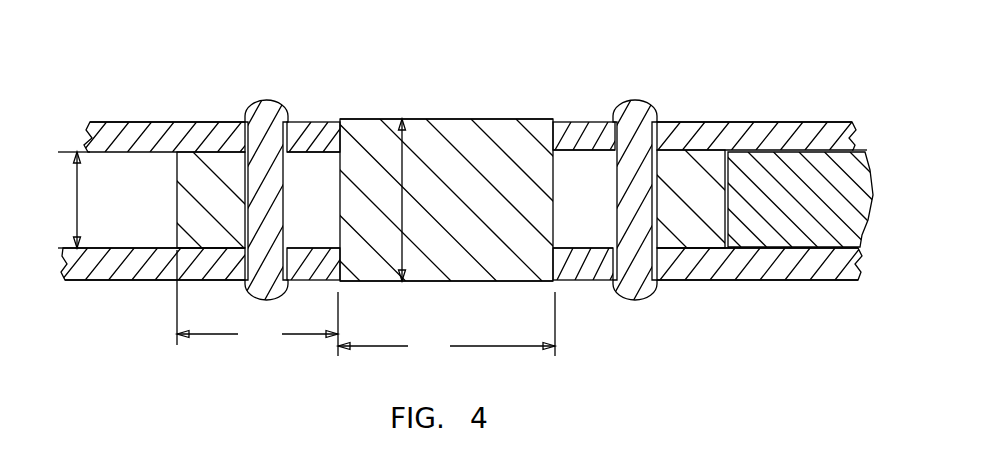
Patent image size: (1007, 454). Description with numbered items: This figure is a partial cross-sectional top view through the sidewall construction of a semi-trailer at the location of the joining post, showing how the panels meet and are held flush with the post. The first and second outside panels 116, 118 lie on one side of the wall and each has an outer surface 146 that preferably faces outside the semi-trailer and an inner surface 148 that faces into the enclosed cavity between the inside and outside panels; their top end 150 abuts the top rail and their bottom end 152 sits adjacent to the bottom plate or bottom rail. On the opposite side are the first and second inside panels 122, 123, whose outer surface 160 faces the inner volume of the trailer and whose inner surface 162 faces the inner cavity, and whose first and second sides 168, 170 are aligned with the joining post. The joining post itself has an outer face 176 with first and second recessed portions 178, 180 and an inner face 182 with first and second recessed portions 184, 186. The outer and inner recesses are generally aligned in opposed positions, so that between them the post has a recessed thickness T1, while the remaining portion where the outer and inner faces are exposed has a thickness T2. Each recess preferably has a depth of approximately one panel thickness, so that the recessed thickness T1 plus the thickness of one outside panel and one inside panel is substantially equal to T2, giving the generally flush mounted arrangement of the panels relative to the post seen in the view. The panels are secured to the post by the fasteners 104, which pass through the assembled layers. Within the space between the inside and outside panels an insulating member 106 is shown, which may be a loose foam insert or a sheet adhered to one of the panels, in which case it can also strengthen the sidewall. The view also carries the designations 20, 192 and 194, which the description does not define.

The fastener assembly 20 is at (489, 112).
The fasteners 104 is at (265, 108).
The insulating member 106 is at (757, 158).
The first outside panel 116 is at (178, 128).
The second outside panel 118 is at (833, 135).
The first inside panel 122 is at (147, 273).
The second inside panel 123 is at (733, 270).
The outer surface 146 is at (103, 280).
The inner surface 148 is at (78, 252).
The top end 150 is at (335, 124).
The bottom end 152 is at (560, 122).
The outer surface 160 is at (127, 123).
The inner surface 162 is at (105, 150).
The first side 168 is at (316, 281).
The second side 170 is at (580, 281).
The outer face 176 is at (487, 281).
The first recessed portion 178 is at (317, 153).
The second recessed portion 180 is at (580, 152).
The inner face 182 is at (427, 118).
The first recessed portion 184 is at (310, 247).
The second recessed portion 186 is at (570, 247).
The flange length 192 is at (257, 303).
The body length 194 is at (446, 324).
The recessed thickness T1 is at (71, 200).
The thickness T2 is at (404, 200).